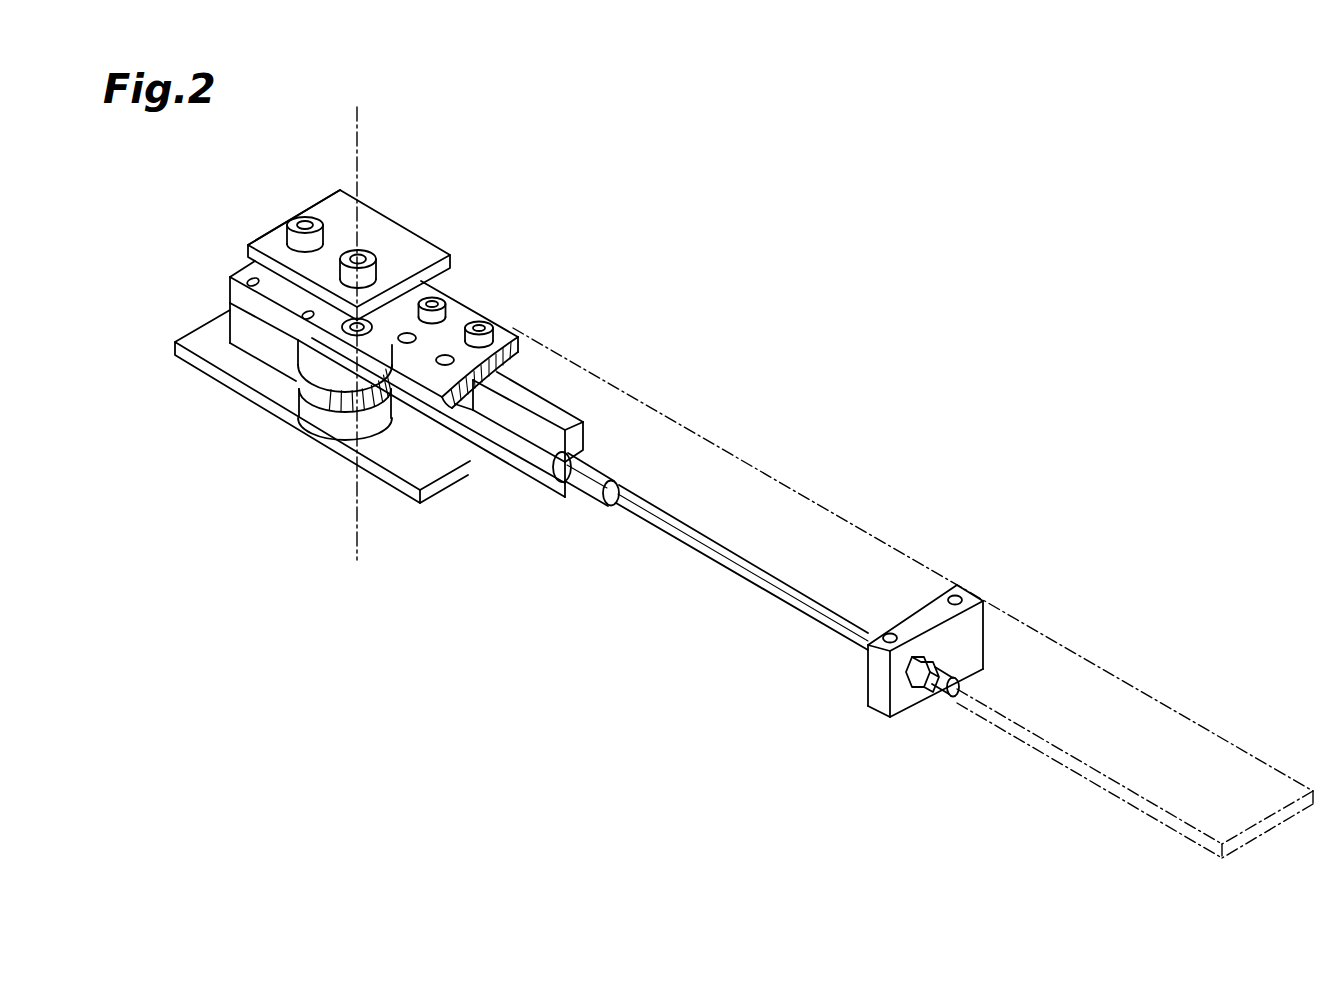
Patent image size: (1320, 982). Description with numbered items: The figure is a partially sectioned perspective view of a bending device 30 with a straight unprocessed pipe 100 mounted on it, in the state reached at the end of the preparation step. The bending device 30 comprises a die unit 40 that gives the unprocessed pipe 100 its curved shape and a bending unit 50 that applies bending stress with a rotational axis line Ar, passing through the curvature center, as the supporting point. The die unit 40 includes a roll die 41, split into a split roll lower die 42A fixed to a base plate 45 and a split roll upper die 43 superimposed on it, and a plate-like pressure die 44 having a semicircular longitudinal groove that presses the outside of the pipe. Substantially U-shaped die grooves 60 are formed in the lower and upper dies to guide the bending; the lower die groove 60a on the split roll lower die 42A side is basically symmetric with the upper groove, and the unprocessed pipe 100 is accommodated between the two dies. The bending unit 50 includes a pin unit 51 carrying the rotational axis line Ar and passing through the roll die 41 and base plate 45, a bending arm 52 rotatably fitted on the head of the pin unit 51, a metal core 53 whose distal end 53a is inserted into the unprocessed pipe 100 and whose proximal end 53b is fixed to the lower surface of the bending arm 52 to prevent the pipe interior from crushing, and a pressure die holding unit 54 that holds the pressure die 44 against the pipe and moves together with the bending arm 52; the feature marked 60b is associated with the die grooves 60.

The rotational axis line Ar is at (360, 126).
The bending device 30 is at (428, 236).
The die unit 40 is at (264, 286).
The roll die 41 is at (264, 309).
The split roll lower die 42A is at (225, 316).
The split roll upper die 43 is at (233, 283).
The pressure die 44 is at (597, 427).
The base plate 45 is at (214, 387).
The bending unit 50 is at (486, 309).
The pin unit 51 is at (365, 319).
The bending arm 52 is at (748, 453).
The metal core 53 is at (795, 636).
The distal end 53a is at (598, 490).
The proximal end 53b is at (986, 637).
The pressure die holding unit 54 is at (453, 494).
The die grooves 60 is at (276, 428).
The lower die groove 60a is at (325, 440).
The outer bearing ring 60b is at (318, 425).
The unprocessed pipe 100 is at (528, 478).